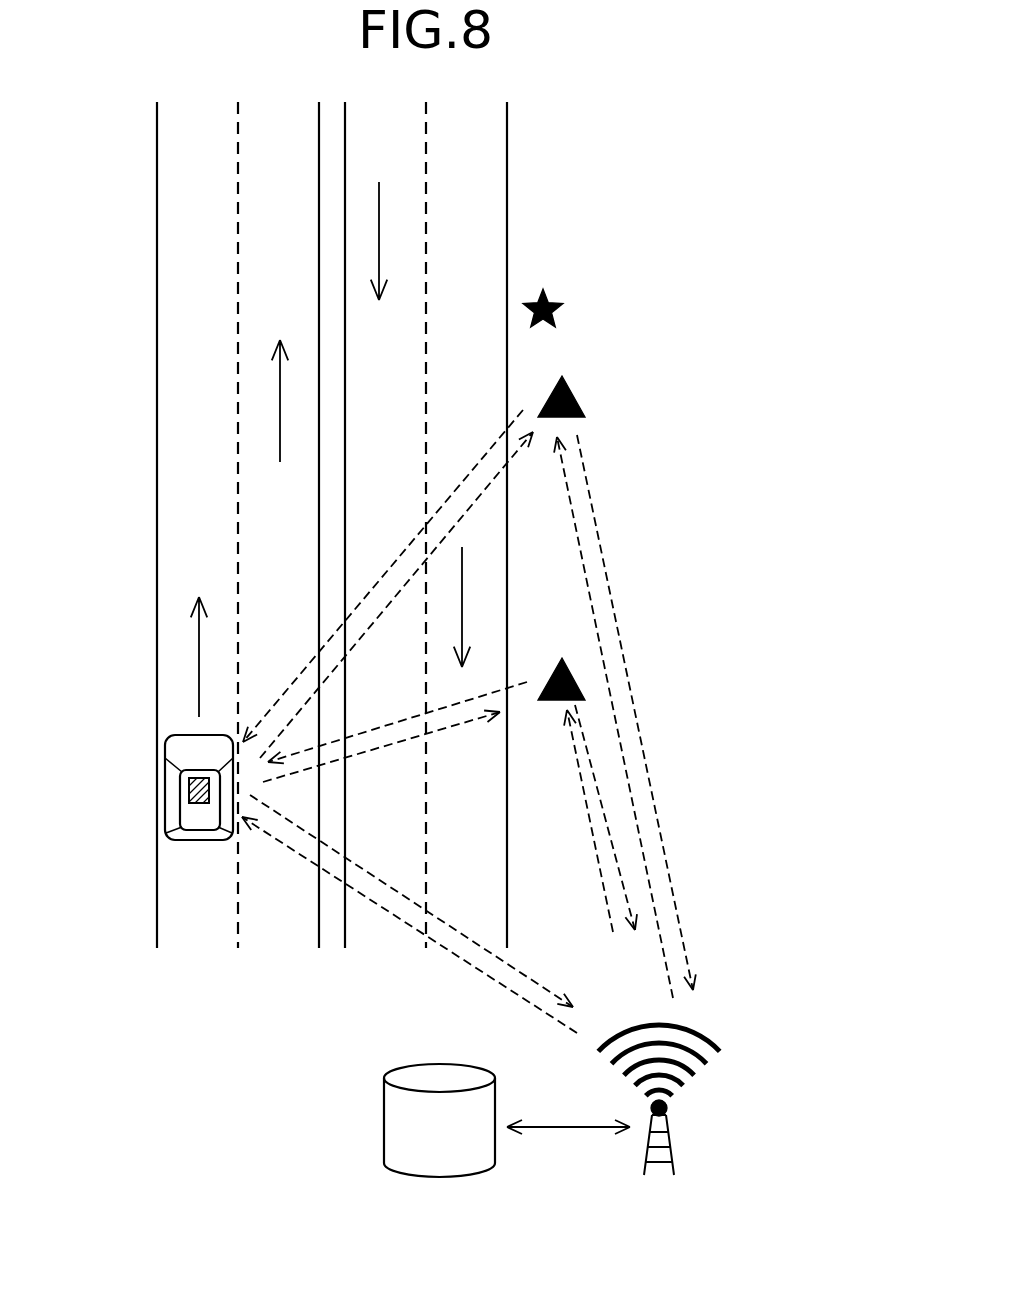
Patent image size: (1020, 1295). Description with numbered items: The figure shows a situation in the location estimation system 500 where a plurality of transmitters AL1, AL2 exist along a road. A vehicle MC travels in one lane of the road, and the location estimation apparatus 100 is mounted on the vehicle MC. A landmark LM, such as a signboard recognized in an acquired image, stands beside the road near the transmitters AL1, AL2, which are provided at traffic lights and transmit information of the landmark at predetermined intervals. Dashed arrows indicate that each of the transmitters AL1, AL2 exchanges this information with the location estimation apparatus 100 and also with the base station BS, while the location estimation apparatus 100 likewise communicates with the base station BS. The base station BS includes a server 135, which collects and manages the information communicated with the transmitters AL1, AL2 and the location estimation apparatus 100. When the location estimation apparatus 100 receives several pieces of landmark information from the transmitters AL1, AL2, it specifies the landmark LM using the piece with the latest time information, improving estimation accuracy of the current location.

The location estimation system 500 is at (640, 138).
The landmark LM is at (570, 305).
The transmitter AL2 is at (587, 396).
The transmitter AL1 is at (551, 660).
The vehicle MC is at (165, 748).
The location estimation apparatus 100 is at (189, 790).
The server 135 is at (411, 1078).
The base station BS is at (716, 1115).